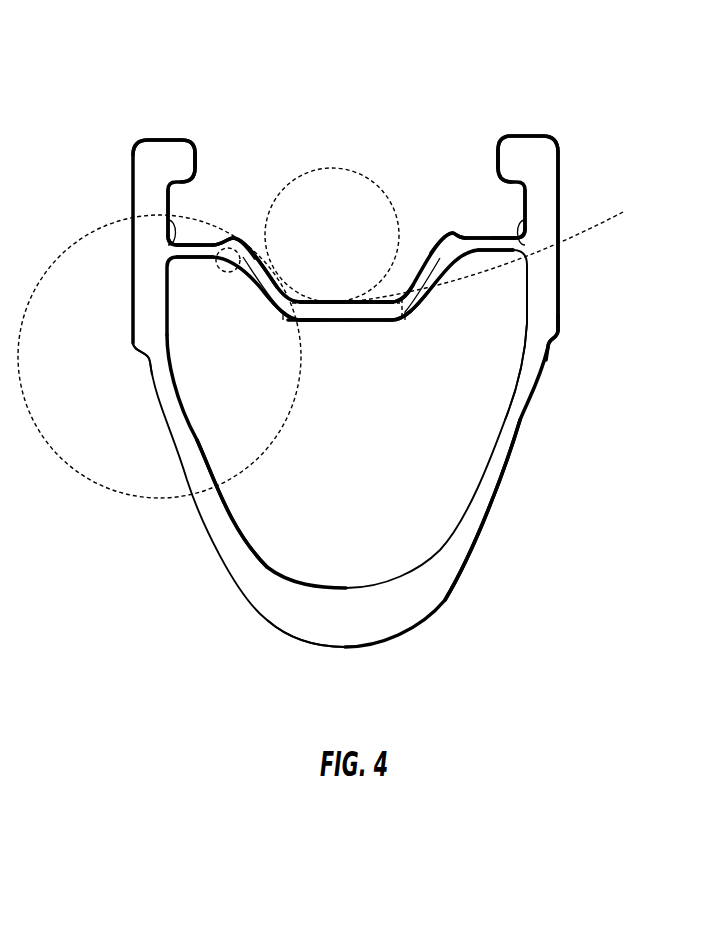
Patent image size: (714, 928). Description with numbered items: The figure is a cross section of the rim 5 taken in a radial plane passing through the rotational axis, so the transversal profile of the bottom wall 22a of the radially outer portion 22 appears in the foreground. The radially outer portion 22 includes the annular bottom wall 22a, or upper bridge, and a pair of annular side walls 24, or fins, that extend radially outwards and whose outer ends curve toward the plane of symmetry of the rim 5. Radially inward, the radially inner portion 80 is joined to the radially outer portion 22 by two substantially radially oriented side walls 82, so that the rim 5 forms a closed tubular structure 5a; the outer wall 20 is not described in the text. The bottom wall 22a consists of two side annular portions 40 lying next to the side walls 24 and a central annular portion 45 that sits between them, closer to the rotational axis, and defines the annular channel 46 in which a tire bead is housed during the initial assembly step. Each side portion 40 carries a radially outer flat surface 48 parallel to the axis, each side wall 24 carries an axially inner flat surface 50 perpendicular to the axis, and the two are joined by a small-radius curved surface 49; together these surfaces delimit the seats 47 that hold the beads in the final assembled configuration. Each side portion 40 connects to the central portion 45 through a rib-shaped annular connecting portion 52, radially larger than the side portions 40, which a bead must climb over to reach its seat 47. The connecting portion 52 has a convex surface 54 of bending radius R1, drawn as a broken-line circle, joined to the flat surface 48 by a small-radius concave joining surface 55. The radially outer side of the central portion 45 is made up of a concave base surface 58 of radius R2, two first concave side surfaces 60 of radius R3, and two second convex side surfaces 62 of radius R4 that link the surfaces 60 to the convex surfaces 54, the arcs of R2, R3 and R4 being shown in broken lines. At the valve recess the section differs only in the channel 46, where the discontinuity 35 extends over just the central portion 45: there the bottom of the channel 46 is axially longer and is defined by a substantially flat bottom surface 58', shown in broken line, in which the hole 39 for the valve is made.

The rim 5 is at (345, 325).
The tubular structure 5a is at (357, 461).
The outer wall 20 is at (482, 520).
The radially outer portion 22 is at (563, 186).
The annular bottom wall 22a is at (483, 247).
The annular side walls 24 is at (167, 147).
The discontinuity 35 is at (429, 347).
The hole 39 is at (285, 359).
The side annular portions 40 is at (190, 254).
The central annular portion 45 is at (317, 311).
The annular channel 46 is at (358, 177).
The seats 47 is at (346, 132).
The radially outer flat surface 48 is at (170, 212).
The curved surface 49 is at (200, 232).
The axially inner flat surface 50 is at (168, 238).
The annular connecting portion 52 is at (242, 250).
The convex surface 54 is at (233, 236).
The concave joining surface 55 is at (227, 245).
The concave base surface 58 is at (346, 268).
The bottom surface 58' is at (349, 341).
The first concave side surfaces 60 is at (293, 288).
The second convex side surfaces 62 is at (264, 255).
The radially inner portion 80 is at (290, 618).
The side walls 82 is at (133, 307).
The bending radius R1 is at (225, 282).
The bending radius R2 is at (481, 245).
The bending radius R3 is at (332, 210).
The bending radius R4 is at (159, 382).